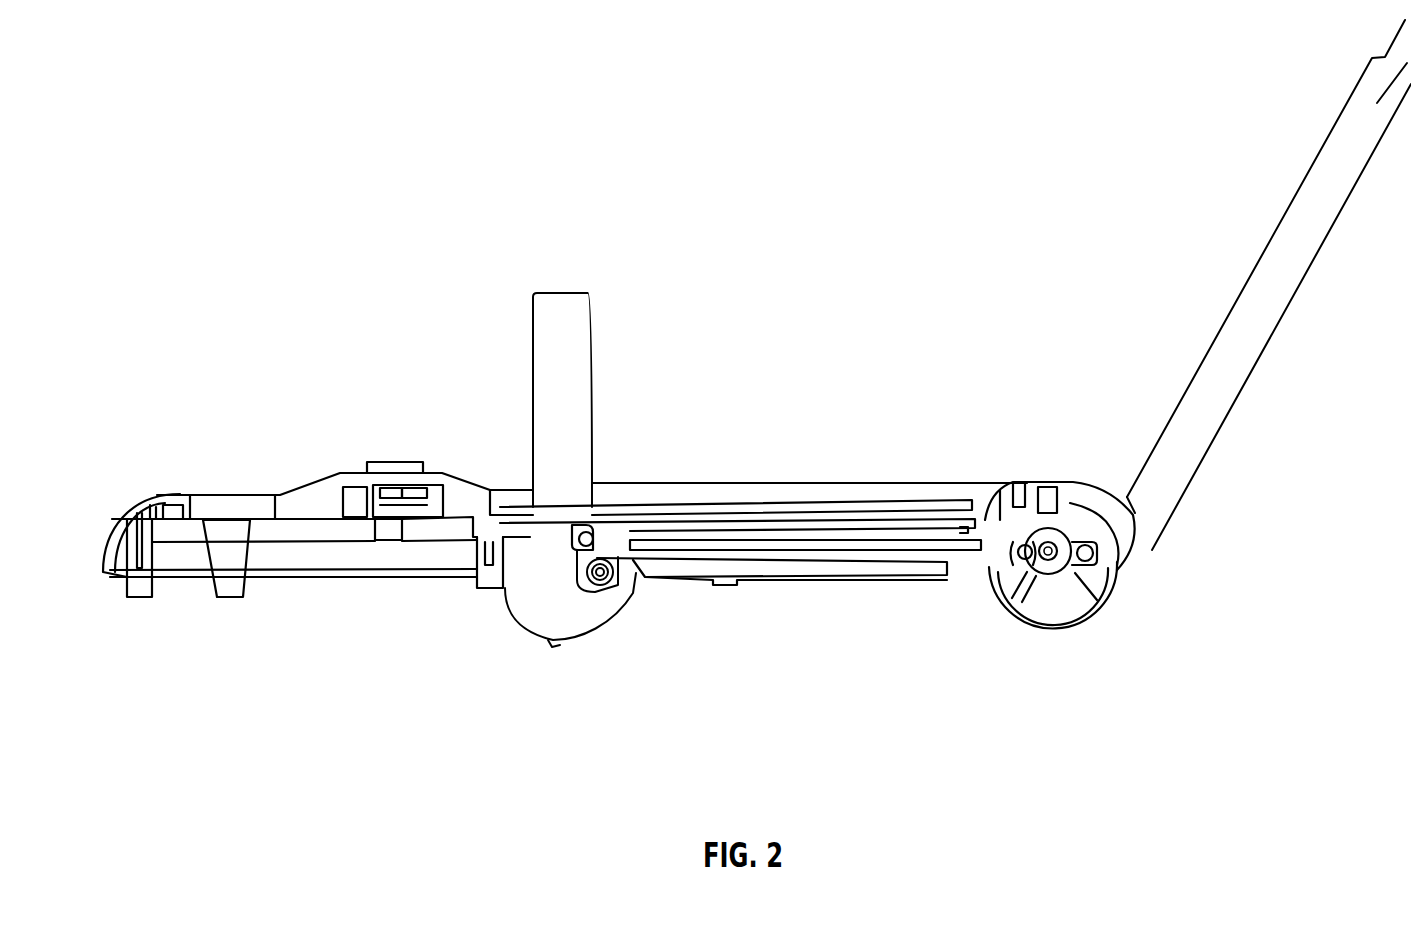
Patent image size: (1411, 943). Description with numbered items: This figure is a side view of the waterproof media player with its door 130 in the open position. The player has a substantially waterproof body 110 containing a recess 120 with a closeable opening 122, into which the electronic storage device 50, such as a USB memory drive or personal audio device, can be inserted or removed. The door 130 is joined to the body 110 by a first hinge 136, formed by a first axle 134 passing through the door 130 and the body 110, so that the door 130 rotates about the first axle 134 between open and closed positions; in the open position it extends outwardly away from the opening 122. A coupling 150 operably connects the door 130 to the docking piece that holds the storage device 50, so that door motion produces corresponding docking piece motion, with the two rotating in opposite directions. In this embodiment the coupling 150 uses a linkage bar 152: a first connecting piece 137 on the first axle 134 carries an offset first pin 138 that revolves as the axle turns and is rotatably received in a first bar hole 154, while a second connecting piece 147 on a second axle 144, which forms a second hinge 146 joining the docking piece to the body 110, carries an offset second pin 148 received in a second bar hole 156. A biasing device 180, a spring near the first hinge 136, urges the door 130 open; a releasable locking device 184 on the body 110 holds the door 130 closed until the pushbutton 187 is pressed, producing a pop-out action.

The electronic storage device 50 is at (555, 323).
The body 110 is at (297, 490).
The recess 120 is at (843, 484).
The opening 122 is at (800, 480).
The door 130 is at (1277, 283).
The first axle 134 is at (1050, 553).
The first hinge 136 is at (1052, 640).
The first connecting piece 137 is at (1067, 548).
The first pin 138 is at (1022, 565).
The second axle 144 is at (595, 575).
The second hinge 146 is at (607, 637).
The second connecting piece 147 is at (610, 583).
The second pin 148 is at (567, 560).
The coupling 150 is at (823, 660).
The linkage bar 152 is at (878, 560).
The first bar hole 154 is at (1024, 548).
The second bar hole 156 is at (588, 536).
The biasing device 180 is at (1072, 544).
The locking device 184 is at (400, 505).
The pushbutton 187 is at (396, 462).